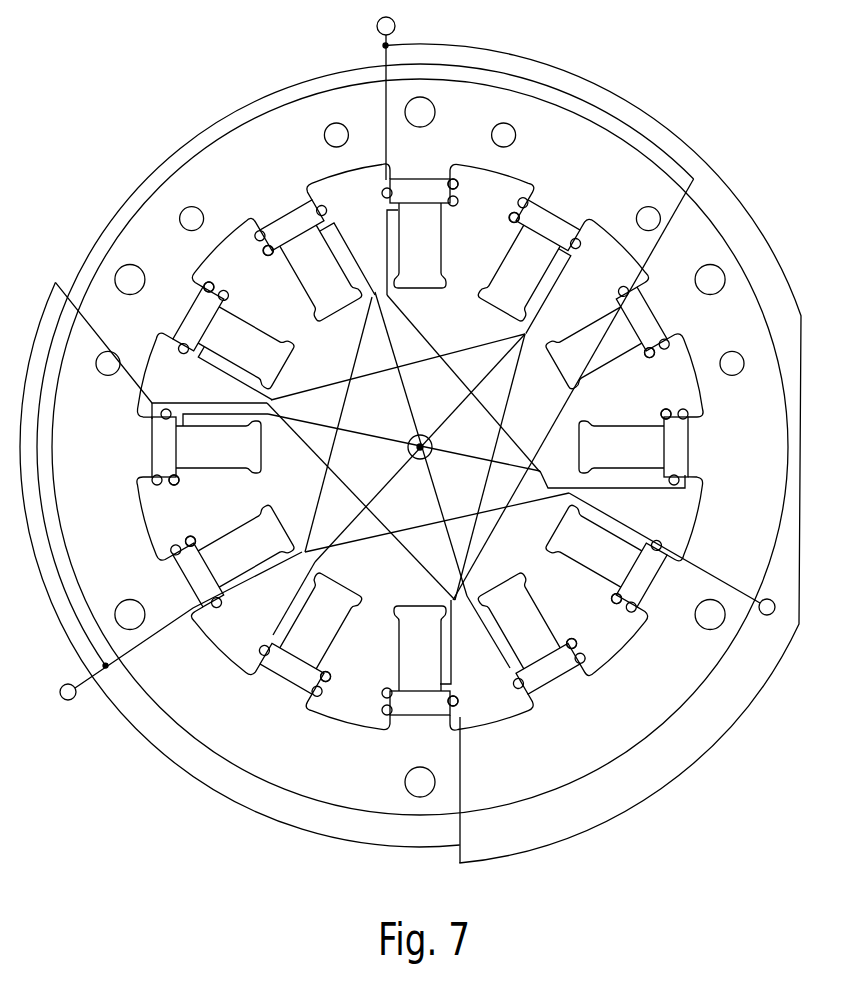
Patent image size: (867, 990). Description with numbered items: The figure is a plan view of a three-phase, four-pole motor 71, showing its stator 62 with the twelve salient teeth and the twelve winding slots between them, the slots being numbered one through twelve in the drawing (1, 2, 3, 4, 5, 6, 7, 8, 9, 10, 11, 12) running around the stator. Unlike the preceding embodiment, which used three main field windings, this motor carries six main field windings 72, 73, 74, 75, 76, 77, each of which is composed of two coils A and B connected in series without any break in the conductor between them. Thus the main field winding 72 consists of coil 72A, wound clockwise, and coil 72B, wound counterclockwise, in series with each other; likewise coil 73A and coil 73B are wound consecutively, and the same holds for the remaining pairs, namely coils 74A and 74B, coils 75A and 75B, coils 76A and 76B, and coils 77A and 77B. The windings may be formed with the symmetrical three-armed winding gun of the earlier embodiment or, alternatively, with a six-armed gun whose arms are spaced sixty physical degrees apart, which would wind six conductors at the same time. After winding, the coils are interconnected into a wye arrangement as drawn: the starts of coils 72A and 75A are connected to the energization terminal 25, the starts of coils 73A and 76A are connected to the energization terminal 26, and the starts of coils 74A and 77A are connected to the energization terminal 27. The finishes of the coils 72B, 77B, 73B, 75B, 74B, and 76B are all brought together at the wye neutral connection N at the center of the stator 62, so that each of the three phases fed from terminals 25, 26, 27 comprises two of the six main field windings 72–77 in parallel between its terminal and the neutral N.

The motor 71 is at (667, 99).
The stator 62 is at (708, 218).
The energization terminal 25 is at (396, 20).
The energization terminal 26 is at (769, 600).
The energization terminal 27 is at (70, 700).
The wye neutral connection N is at (433, 446).
The main field winding 72 is at (562, 308).
The main field winding 73 is at (473, 603).
The main field winding 74 is at (259, 391).
The main field winding 75 is at (279, 582).
The main field winding 76 is at (369, 286).
The main field winding 77 is at (577, 495).
The coil 72A is at (455, 189).
The coil 72B is at (666, 410).
The coil 73A is at (615, 603).
The coil 73B is at (328, 672).
The coil 74A is at (196, 538).
The coil 74B is at (268, 256).
The coil 75A is at (458, 701).
The coil 75B is at (176, 485).
The coil 76A is at (211, 285).
The coil 76B is at (510, 221).
The coil 77A is at (660, 362).
The coil 77B is at (569, 640).
The pole 1 is at (420, 233).
The pole 2 is at (313, 262).
The pole 3 is at (235, 340).
The pole 4 is at (206, 447).
The pole 5 is at (235, 554).
The pole 6 is at (313, 632).
The pole 7 is at (420, 660).
The pole 8 is at (527, 632).
The pole 9 is at (605, 554).
The pole 10 is at (633, 447).
The pole 11 is at (605, 340).
The pole 12 is at (527, 262).